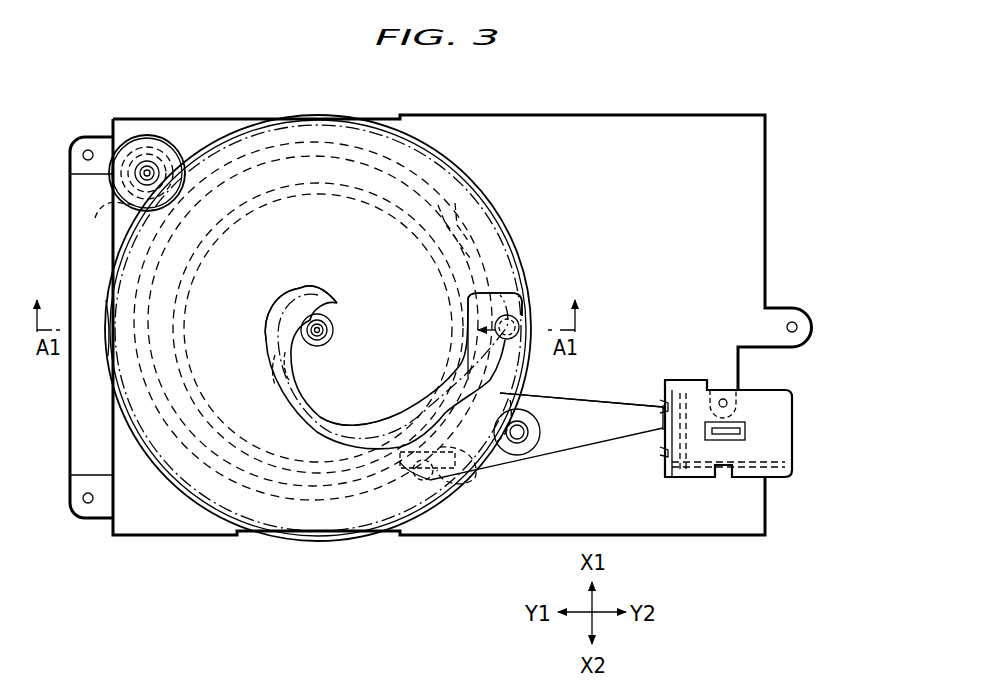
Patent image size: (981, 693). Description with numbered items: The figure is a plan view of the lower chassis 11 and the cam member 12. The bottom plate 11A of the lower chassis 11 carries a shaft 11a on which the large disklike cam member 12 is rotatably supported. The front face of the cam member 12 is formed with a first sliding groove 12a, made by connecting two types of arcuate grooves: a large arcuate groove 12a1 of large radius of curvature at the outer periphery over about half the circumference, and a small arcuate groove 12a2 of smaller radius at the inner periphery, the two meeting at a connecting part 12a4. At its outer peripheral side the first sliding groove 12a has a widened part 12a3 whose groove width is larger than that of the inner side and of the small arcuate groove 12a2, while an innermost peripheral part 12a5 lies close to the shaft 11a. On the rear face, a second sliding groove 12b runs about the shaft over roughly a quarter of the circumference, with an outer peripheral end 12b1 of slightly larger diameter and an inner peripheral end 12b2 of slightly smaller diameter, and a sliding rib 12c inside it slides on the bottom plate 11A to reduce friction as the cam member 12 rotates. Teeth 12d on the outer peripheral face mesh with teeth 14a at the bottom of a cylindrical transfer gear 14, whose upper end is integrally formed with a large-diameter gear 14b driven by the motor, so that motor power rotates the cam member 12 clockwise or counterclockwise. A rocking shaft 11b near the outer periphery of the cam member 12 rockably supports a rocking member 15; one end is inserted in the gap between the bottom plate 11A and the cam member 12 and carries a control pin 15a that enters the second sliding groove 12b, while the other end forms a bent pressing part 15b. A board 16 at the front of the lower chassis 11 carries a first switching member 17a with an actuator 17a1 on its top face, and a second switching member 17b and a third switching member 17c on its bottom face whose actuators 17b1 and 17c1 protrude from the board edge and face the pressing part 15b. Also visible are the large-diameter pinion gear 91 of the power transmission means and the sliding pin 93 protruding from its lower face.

The lower chassis 11 is at (655, 112).
The bottom plate 11A is at (748, 217).
The shaft 11a is at (320, 342).
The rocking shaft 11b is at (517, 447).
The cam member 12 is at (465, 175).
The first sliding groove 12a is at (300, 423).
The large arcuate groove 12a1 is at (352, 412).
The small arcuate groove 12a2 is at (278, 300).
The widened part 12a3 is at (470, 306).
The connecting part 12a4 is at (275, 373).
The innermost peripheral part 12a5 is at (337, 298).
The second sliding groove 12b is at (312, 488).
The outer peripheral end 12b1 is at (478, 495).
The inner peripheral end 12b2 is at (482, 238).
The sliding rib 12c is at (190, 290).
The teeth 12d is at (108, 268).
The transfer gear 14 is at (170, 140).
The teeth 14a is at (112, 202).
The large-diameter gear 14b is at (149, 145).
The rocking member 15 is at (576, 440).
The control pin 15a is at (420, 500).
The pressing part 15b is at (630, 394).
The board 16 is at (766, 392).
The first switching member 17a is at (748, 432).
The actuator 17a1 is at (738, 434).
The second switching member 17b is at (683, 400).
The actuator 17b1 is at (664, 405).
The third switching member 17c is at (690, 470).
The actuator 17c1 is at (664, 455).
The large-diameter pinion gear 91 is at (497, 292).
The sliding pin 93 is at (519, 312).